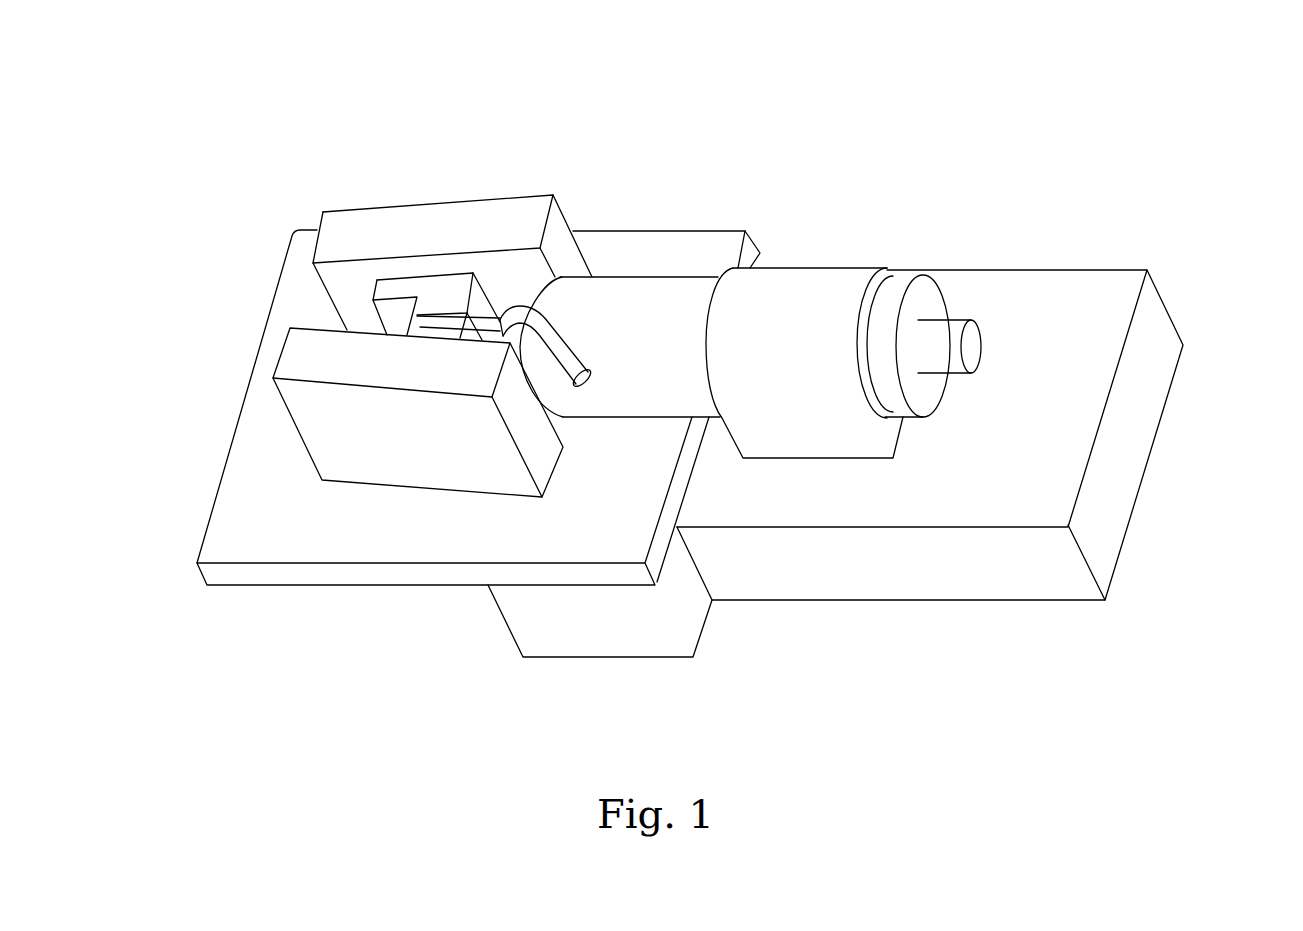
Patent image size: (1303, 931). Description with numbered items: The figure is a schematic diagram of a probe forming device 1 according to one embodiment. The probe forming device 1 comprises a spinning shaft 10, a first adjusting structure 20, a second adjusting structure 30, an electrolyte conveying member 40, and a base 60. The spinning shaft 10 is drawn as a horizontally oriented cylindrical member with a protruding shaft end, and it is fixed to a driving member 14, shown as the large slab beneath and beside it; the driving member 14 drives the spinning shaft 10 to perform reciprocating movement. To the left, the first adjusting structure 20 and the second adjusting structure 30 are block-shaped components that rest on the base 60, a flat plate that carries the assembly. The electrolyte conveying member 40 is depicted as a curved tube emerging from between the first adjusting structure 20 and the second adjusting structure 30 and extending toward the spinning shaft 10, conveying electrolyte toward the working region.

The probe forming device 1 is at (1276, 64).
The spinning shaft 10 is at (897, 285).
The driving member 14 is at (1097, 282).
The first adjusting structure 20 is at (457, 228).
The second adjusting structure 30 is at (302, 357).
The electrolyte conveying member 40 is at (561, 363).
The base 60 is at (252, 488).